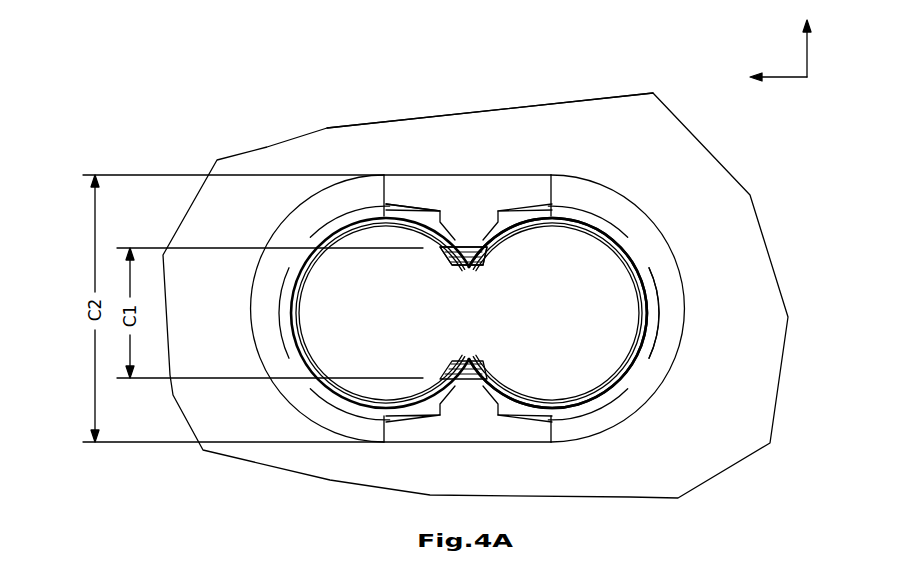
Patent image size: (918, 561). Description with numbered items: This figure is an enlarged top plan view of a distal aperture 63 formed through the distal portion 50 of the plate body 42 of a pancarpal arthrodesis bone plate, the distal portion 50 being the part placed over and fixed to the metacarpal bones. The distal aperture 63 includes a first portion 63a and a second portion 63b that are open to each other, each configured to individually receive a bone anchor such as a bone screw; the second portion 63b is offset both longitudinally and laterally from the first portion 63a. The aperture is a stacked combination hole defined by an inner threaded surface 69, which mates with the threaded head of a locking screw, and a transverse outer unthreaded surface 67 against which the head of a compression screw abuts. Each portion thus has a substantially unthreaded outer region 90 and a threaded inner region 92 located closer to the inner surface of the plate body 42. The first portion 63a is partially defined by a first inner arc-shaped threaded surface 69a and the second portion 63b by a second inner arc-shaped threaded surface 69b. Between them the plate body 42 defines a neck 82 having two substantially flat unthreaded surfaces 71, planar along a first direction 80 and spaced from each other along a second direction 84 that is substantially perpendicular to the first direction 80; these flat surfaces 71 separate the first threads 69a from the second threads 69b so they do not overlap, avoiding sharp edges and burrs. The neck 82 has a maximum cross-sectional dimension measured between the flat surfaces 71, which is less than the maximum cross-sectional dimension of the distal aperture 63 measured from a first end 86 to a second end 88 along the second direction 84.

The plate body 42 is at (263, 150).
The distal portion 50 is at (565, 102).
The distal aperture 63 is at (668, 243).
The first portion 63a is at (333, 323).
The second portion 63b is at (598, 345).
The transverse outer unthreaded surface 67 is at (670, 300).
The threaded surface 69 is at (645, 200).
The first inner arc-shaped threaded surface 69a is at (400, 205).
The second inner arc-shaped threaded surface 69b is at (605, 413).
The substantially flat unthreaded surface 71 is at (466, 258).
The first direction 80 is at (778, 66).
The neck 82 is at (457, 248).
The second direction 84 is at (821, 48).
The first end 86 is at (500, 175).
The second end 88 is at (505, 445).
The outer region 90 is at (575, 187).
The inner region 92 is at (318, 240).